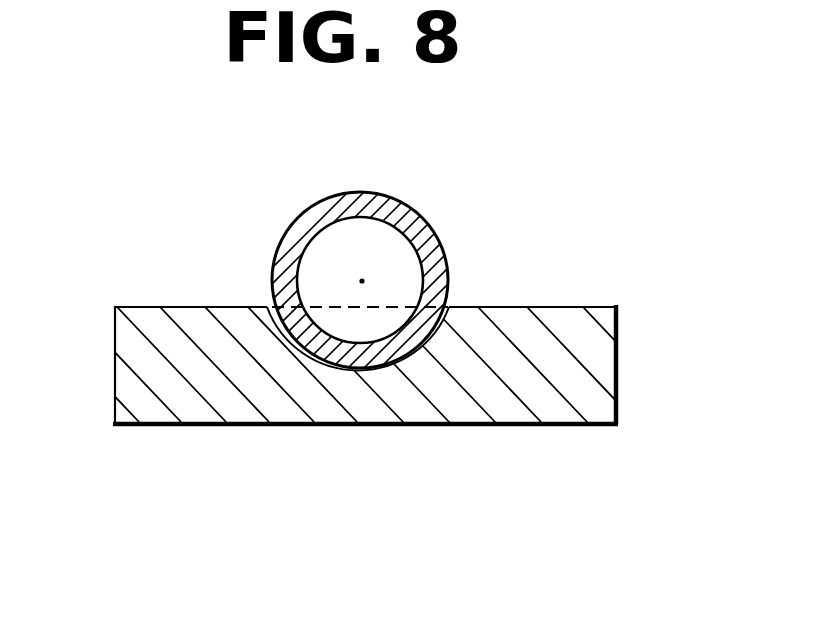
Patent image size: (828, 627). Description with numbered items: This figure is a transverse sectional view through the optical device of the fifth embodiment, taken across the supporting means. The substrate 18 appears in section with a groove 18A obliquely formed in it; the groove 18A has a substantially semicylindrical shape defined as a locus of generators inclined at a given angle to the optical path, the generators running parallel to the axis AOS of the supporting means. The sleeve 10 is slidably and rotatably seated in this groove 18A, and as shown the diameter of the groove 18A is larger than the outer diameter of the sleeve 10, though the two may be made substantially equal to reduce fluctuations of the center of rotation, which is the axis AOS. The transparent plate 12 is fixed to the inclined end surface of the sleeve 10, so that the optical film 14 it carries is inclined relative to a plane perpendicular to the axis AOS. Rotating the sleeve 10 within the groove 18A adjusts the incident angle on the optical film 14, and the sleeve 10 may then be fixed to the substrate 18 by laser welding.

The sleeve 10 is at (278, 268).
The transparent plate 12 is at (335, 233).
The optical film 14 is at (335, 233).
The axis of the supporting means AOS is at (362, 281).
The substrate 18 is at (533, 425).
The groove 18A is at (450, 307).